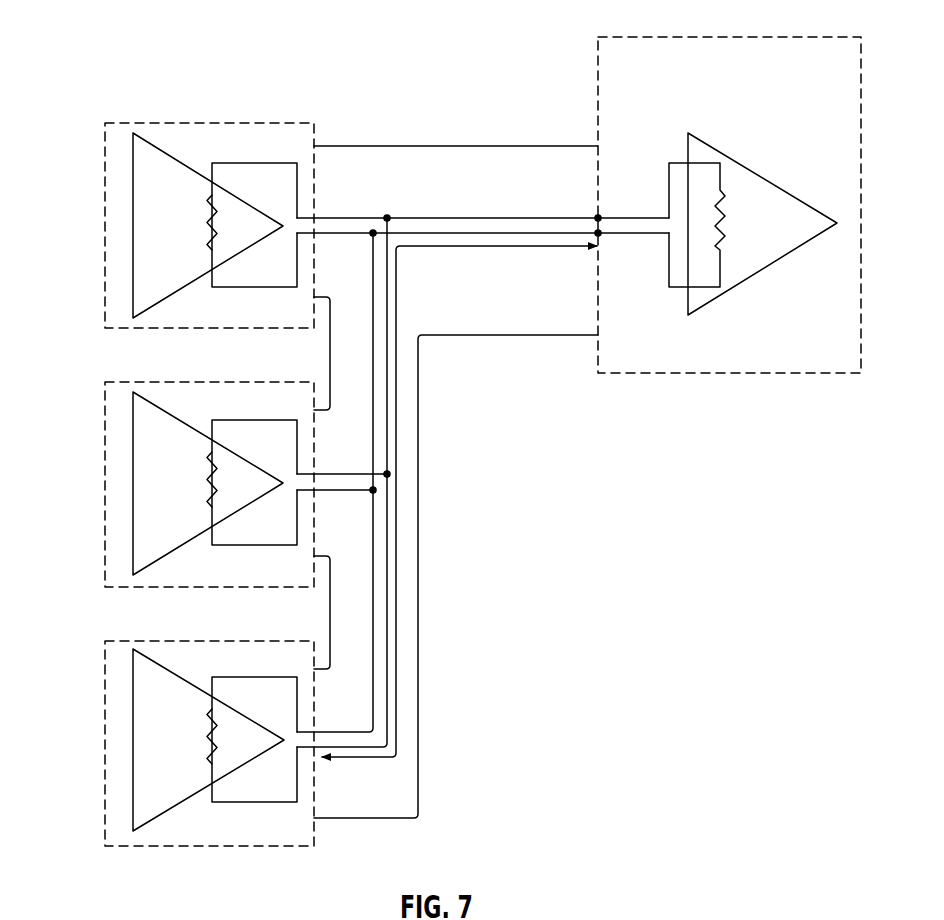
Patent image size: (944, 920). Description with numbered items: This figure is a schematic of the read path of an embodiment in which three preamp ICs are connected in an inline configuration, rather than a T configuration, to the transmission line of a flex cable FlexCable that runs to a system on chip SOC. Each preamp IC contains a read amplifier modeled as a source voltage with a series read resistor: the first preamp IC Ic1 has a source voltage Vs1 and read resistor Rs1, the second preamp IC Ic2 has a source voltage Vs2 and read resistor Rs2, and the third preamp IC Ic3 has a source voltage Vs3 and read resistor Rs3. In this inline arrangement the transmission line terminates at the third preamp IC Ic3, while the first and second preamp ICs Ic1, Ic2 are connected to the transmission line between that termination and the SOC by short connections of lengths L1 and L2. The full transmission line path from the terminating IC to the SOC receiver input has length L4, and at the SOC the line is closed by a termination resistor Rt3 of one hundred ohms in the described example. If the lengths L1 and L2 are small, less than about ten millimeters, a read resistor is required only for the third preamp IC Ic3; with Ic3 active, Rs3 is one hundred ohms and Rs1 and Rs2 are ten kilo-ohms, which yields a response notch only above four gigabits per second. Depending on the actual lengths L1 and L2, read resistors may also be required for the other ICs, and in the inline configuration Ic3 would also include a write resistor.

The first preamp IC Ic1 is at (175, 225).
The second preamp IC Ic2 is at (175, 484).
The third preamp IC Ic3 is at (175, 743).
The read amp source voltage of IC1 Vs1 is at (254, 211).
The read amp source voltage of IC2 Vs2 is at (254, 468).
The read amp source voltage of IC3 Vs3 is at (254, 725).
The read resistor of IC1 Rs1 is at (234, 222).
The read resistor of IC2 Rs2 is at (235, 479).
The read resistor of IC3 Rs3 is at (235, 736).
The trace length L1 is at (369, 209).
The trace length L2 is at (372, 463).
The transmission line length L4 is at (459, 501).
The flex cable FlexCable is at (362, 146).
The system on chip SOC is at (728, 189).
The termination resistor Rt3 is at (739, 225).